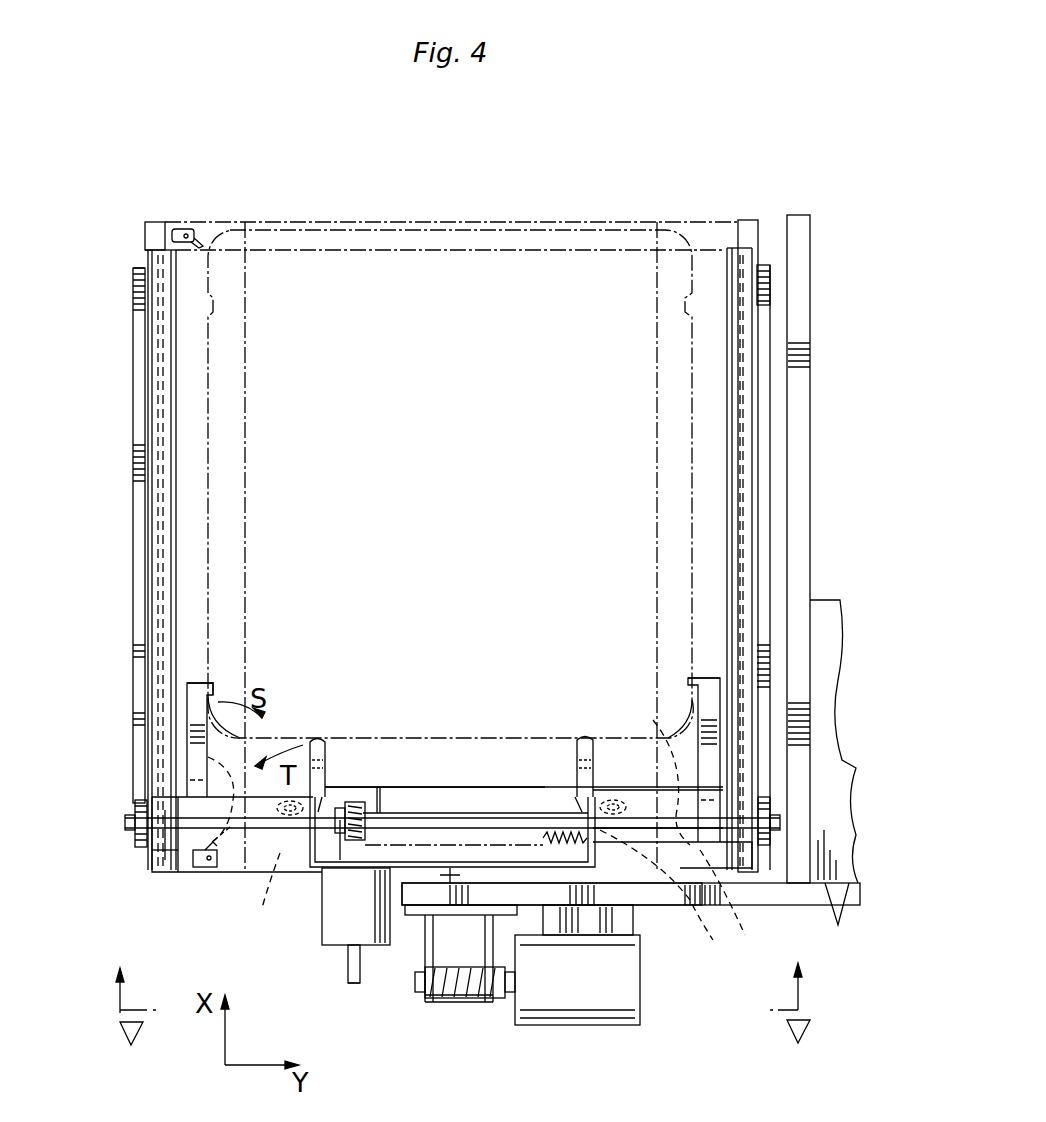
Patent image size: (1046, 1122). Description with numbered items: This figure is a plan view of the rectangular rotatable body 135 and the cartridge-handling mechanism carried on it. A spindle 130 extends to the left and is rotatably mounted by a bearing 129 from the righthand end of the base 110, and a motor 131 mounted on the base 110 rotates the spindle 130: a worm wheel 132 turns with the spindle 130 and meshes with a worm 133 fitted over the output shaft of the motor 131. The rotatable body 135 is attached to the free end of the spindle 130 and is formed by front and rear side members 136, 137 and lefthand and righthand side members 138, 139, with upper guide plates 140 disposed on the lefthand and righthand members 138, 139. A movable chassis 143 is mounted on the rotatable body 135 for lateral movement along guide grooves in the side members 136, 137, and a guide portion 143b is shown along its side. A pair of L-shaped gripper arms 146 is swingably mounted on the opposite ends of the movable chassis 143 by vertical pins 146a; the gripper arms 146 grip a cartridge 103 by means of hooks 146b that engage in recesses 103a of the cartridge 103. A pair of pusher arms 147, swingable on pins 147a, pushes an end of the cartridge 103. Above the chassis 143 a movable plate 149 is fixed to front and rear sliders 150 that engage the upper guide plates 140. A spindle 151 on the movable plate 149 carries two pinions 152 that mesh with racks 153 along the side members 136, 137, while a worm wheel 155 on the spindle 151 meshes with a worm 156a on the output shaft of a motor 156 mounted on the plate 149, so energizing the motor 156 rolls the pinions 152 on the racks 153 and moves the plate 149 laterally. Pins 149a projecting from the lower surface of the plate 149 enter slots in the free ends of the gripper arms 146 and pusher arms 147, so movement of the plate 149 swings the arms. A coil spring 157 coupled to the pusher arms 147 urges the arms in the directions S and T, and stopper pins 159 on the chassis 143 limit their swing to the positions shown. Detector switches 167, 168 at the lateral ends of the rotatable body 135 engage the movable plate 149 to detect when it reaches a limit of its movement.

The cartridge 103 is at (548, 300).
The recesses 103a is at (203, 698).
The base 110 is at (808, 892).
The bearing 129 is at (428, 960).
The spindle 130 is at (430, 895).
The motor 131 is at (625, 985).
The worm wheel 132 is at (435, 1000).
The worm 133 is at (485, 1000).
The rectangular rotatable body 135 is at (137, 470).
The front side member 136 is at (752, 232).
The rear side member 137 is at (150, 238).
The lefthand side member 138 is at (715, 228).
The righthand side member 139 is at (160, 858).
The upper guide plates 140 is at (180, 388).
The movable chassis 143 is at (460, 800).
The guide rail 143b is at (160, 265).
The gripper arms 146 is at (195, 765).
The pins 146a is at (238, 848).
The hooks 146b is at (195, 683).
The pusher arms 147 is at (318, 760).
The pins 147a is at (320, 812).
The movable plate 149 is at (600, 830).
The pins 149a is at (345, 835).
The sliders 150 is at (190, 858).
The spindle 151 is at (420, 795).
The pinions 152 is at (133, 842).
The racks 153 is at (138, 330).
The worm wheel 155 is at (348, 860).
The motor 156 is at (350, 945).
The worm 156a is at (340, 955).
The coil spring 157 is at (545, 838).
The stopper pins 159 is at (200, 770).
The detector switch 167 is at (180, 232).
The detector switch 168 is at (203, 868).